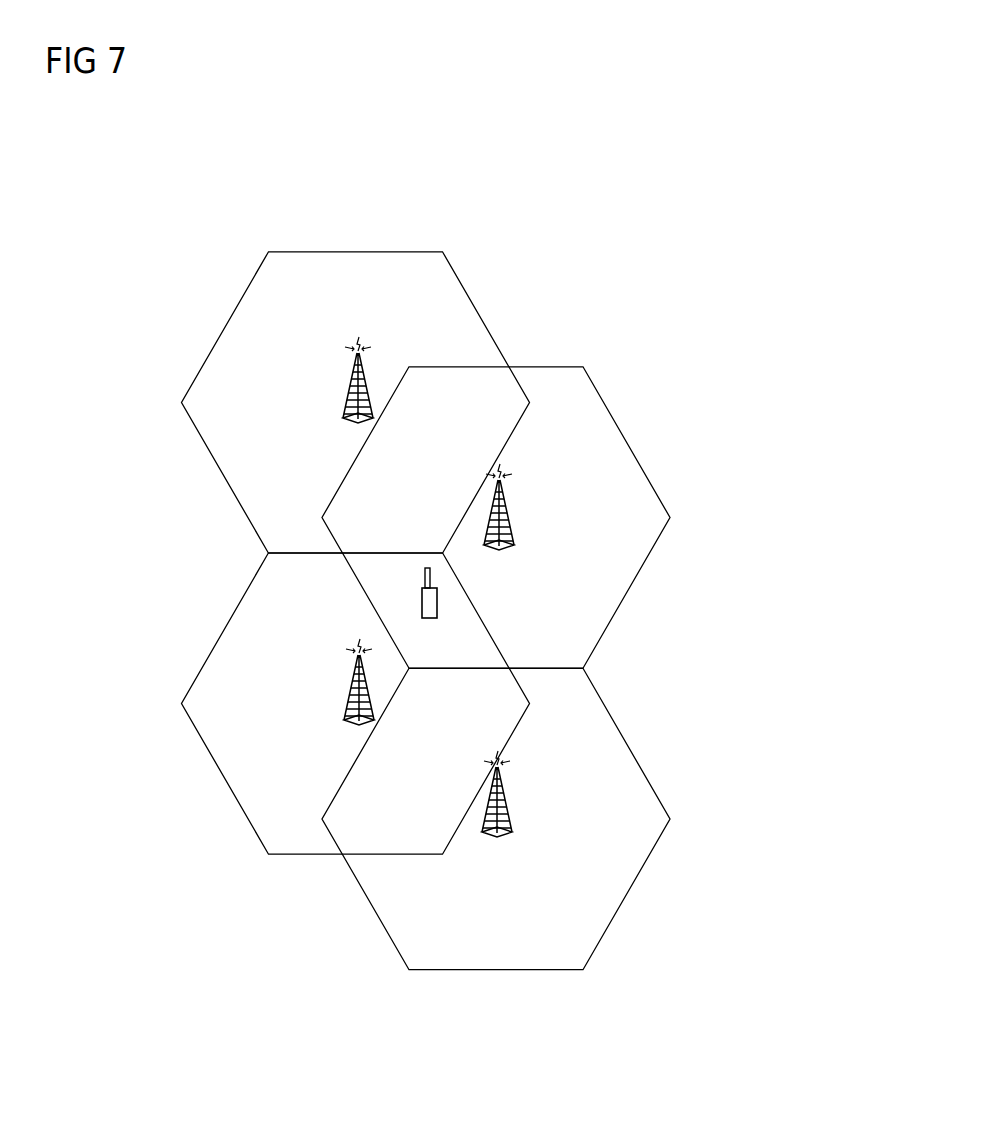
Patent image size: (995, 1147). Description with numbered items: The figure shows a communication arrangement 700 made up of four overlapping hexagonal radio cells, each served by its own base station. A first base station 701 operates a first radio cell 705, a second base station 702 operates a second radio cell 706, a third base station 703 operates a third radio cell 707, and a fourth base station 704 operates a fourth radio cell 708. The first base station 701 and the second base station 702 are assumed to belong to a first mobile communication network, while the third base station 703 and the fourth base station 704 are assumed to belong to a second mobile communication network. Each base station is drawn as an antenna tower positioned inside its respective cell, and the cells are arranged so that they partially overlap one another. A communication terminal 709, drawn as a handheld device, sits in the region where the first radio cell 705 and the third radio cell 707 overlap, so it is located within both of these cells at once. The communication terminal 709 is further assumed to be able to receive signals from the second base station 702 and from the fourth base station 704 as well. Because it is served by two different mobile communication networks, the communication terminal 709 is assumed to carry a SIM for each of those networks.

The communication arrangement 700 is at (805, 78).
The first base station 701 is at (365, 382).
The second base station 702 is at (366, 685).
The third base station 703 is at (505, 492).
The fourth base station 704 is at (505, 793).
The first radio cell 705 is at (460, 283).
The second radio cell 706 is at (248, 587).
The third radio cell 707 is at (572, 367).
The fourth radio cell 708 is at (610, 717).
The communication terminal 709 is at (437, 590).